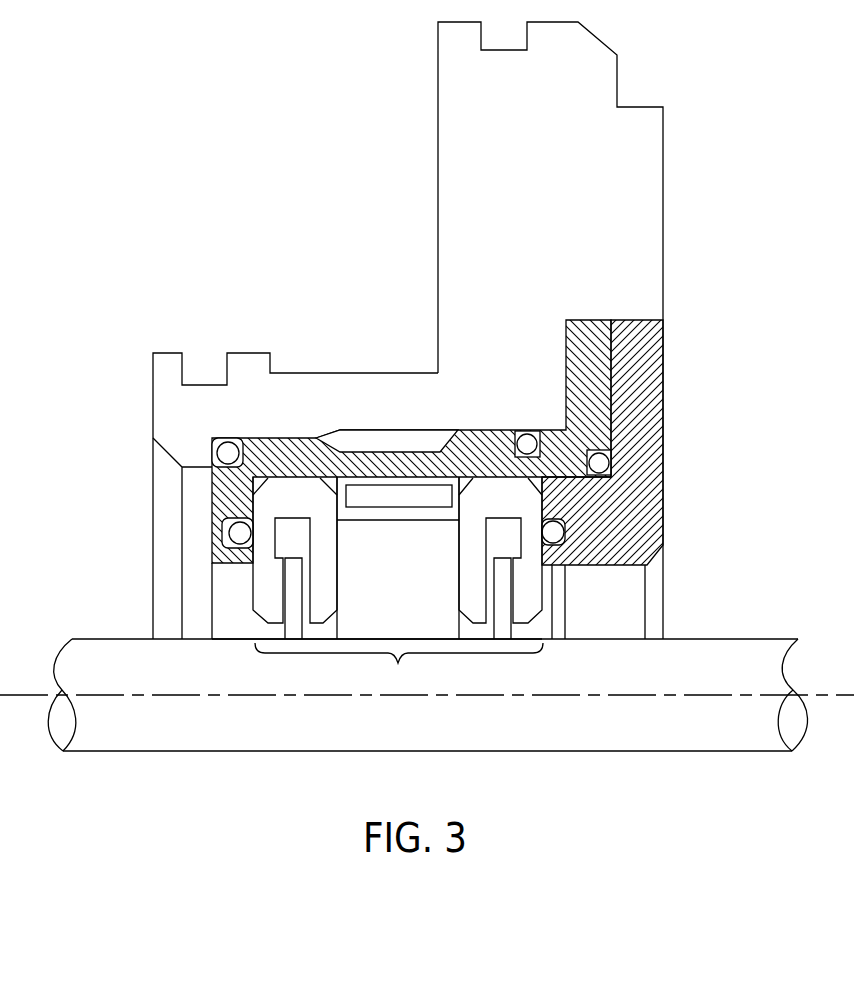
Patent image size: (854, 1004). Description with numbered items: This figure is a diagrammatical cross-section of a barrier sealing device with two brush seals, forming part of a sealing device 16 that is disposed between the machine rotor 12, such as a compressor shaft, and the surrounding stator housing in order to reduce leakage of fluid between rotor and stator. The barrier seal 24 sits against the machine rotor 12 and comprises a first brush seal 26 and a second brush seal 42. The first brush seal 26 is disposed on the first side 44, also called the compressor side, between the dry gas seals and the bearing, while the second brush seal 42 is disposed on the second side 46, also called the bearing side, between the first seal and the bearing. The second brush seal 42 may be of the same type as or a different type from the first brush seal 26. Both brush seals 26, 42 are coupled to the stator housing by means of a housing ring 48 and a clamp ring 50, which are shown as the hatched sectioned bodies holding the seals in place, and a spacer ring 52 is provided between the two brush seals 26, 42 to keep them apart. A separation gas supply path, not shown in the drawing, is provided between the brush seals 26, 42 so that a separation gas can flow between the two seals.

The machine rotor 12 is at (663, 737).
The sealing device 16 is at (263, 663).
The barrier seal 24 is at (399, 667).
The first brush seal 26 is at (250, 588).
The second brush seal 42 is at (532, 630).
The first side 44 is at (73, 513).
The second side 46 is at (752, 513).
The housing ring 48 is at (282, 445).
The clamp ring 50 is at (657, 402).
The spacer ring 52 is at (400, 513).